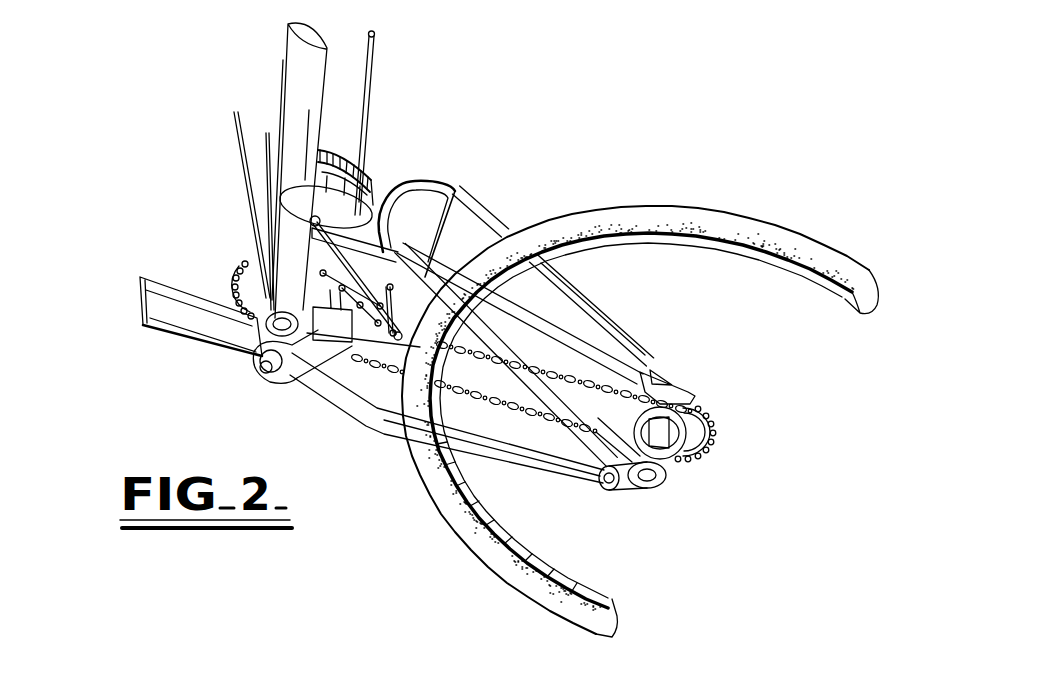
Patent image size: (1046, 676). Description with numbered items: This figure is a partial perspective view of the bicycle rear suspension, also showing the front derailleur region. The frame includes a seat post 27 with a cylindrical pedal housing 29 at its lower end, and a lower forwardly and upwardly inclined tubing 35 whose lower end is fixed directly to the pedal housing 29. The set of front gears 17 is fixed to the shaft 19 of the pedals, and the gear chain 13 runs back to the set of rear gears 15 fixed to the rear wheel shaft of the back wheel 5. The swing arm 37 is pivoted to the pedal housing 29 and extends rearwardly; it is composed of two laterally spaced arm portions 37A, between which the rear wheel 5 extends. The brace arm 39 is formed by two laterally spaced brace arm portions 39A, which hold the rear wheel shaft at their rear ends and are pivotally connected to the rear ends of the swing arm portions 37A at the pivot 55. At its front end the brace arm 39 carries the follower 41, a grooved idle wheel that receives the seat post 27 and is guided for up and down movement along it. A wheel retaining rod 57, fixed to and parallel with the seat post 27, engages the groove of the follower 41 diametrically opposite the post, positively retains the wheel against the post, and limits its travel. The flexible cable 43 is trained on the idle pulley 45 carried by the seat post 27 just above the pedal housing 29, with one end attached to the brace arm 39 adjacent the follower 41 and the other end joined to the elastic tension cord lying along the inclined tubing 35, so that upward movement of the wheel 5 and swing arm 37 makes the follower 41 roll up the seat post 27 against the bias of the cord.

The back wheel 5 is at (872, 292).
The gear chain 13 is at (573, 375).
The set of rear gears 15 is at (705, 455).
The set of front gears 17 is at (253, 260).
The shaft of pedals 19 is at (266, 374).
The seat post 27 is at (293, 54).
The pedal housing 29 is at (250, 332).
The lower forwardly upwardly inclined tubing 35 is at (150, 303).
The swing arm 37 is at (337, 387).
The swing arm portions 37A is at (515, 372).
The brace arm 39 is at (537, 287).
The brace arm portions 39A is at (432, 215).
The follower 41 is at (325, 163).
The flexible cable 43 is at (242, 170).
The idle pulley 45 is at (263, 206).
The pivotal connection 55 is at (611, 490).
The wheel retaining rod 57 is at (366, 87).